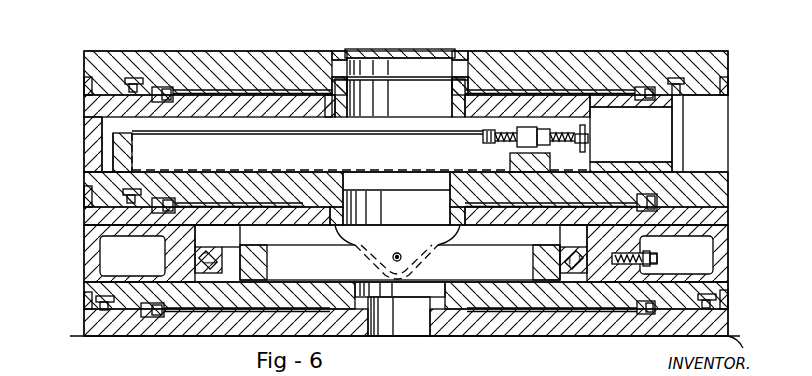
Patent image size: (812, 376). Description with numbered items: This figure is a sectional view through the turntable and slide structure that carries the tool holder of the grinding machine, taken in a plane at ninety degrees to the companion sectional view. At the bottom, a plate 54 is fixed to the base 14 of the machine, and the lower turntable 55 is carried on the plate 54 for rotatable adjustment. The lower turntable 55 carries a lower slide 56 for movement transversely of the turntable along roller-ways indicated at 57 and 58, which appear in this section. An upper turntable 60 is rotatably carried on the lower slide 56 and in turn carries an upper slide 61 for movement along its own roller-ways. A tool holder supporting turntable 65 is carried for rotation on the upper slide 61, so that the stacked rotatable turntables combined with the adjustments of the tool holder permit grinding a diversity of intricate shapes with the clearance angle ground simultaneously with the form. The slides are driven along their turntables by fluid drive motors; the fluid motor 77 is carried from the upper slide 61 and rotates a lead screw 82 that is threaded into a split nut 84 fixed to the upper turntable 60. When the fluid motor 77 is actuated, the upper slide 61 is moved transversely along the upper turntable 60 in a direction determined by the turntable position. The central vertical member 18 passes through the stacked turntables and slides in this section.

The base 14 is at (78, 336).
The spindle shaft 18 is at (402, 50).
The plate 54 is at (90, 322).
The lower turntable 55 is at (90, 285).
The lower slide 56 is at (720, 222).
The roller-way 57 is at (222, 256).
The roller-way 58 is at (572, 247).
The upper turntable 60 is at (84, 177).
The upper slide 61 is at (84, 118).
The tool holder supporting turntable 65 is at (137, 60).
The fluid drive motor 77 is at (658, 134).
The lead screw 82 is at (494, 144).
The split nut 84 is at (548, 147).